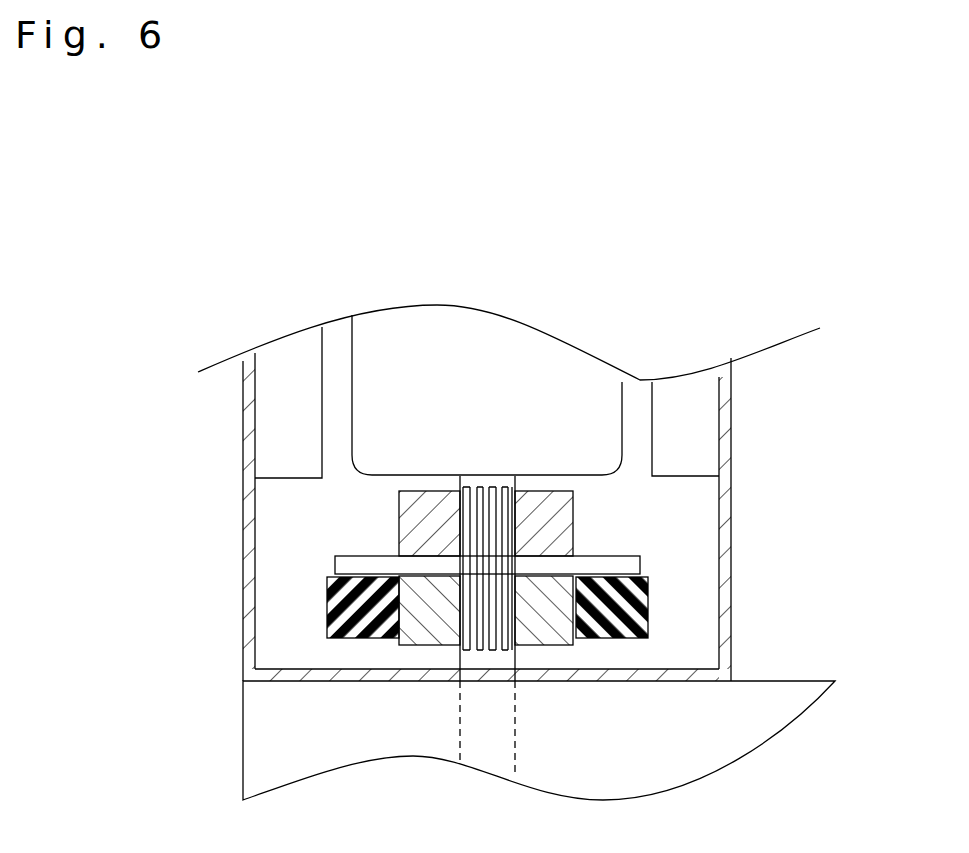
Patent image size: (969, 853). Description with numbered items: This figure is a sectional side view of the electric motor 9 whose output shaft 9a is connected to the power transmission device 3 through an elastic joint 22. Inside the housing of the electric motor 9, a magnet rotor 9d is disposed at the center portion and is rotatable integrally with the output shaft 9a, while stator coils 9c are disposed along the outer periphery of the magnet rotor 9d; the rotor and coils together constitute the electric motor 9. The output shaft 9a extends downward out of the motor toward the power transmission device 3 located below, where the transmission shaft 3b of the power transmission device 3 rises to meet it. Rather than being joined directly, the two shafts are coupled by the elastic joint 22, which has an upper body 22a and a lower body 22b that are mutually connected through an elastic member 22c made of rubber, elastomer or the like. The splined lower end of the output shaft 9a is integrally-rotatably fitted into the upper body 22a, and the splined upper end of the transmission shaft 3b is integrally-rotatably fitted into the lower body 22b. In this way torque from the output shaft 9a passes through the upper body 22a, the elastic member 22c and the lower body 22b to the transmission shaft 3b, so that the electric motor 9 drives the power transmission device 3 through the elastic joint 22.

The power transmission device 3 is at (236, 745).
The transmission shaft 3b is at (467, 663).
The electric motor 9 is at (236, 483).
The output shaft 9a is at (460, 485).
The stator coils 9c is at (297, 432).
The magnet rotor 9d is at (487, 429).
The elastic joint 22 is at (308, 559).
The upper body 22a is at (573, 513).
The lower body 22b is at (558, 640).
The elastic member 22c is at (640, 605).